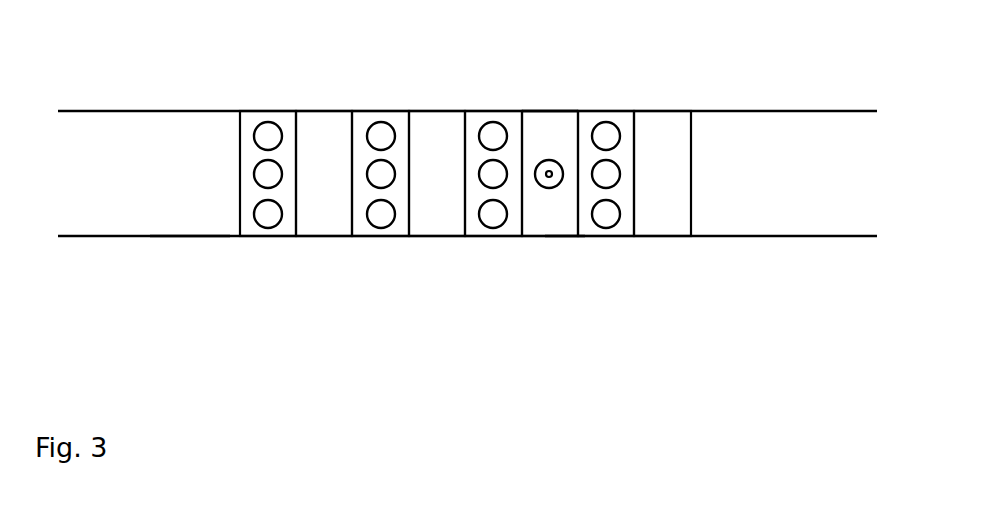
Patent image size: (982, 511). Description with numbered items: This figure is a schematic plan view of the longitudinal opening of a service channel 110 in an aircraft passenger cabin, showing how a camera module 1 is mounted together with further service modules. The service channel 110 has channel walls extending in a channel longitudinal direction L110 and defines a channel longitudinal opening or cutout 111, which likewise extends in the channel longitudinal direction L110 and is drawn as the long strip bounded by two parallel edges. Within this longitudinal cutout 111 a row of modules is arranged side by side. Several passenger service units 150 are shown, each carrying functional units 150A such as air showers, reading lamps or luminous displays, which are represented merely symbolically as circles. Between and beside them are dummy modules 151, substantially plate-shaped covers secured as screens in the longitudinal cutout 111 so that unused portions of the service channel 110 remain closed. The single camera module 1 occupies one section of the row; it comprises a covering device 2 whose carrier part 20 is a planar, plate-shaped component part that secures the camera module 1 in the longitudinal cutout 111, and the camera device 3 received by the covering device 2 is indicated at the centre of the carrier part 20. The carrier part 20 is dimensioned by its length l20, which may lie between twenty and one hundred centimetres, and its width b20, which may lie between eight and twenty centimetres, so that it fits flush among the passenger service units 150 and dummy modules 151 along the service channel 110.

The camera module 1 is at (547, 98).
The covering device 2 is at (568, 244).
The camera device 3 is at (532, 203).
The carrier part 20 is at (563, 128).
The service channel 110 is at (770, 111).
The channel longitudinal opening or cutout 111 is at (170, 218).
The passenger service units (PSUs) 150 is at (261, 111).
The functional units 150A is at (254, 135).
The dummy modules 151 is at (325, 236).
The length of the carrier part l20 is at (736, 120).
The width of the carrier part b20 is at (578, 236).
The channel longitudinal direction L110 is at (270, 298).